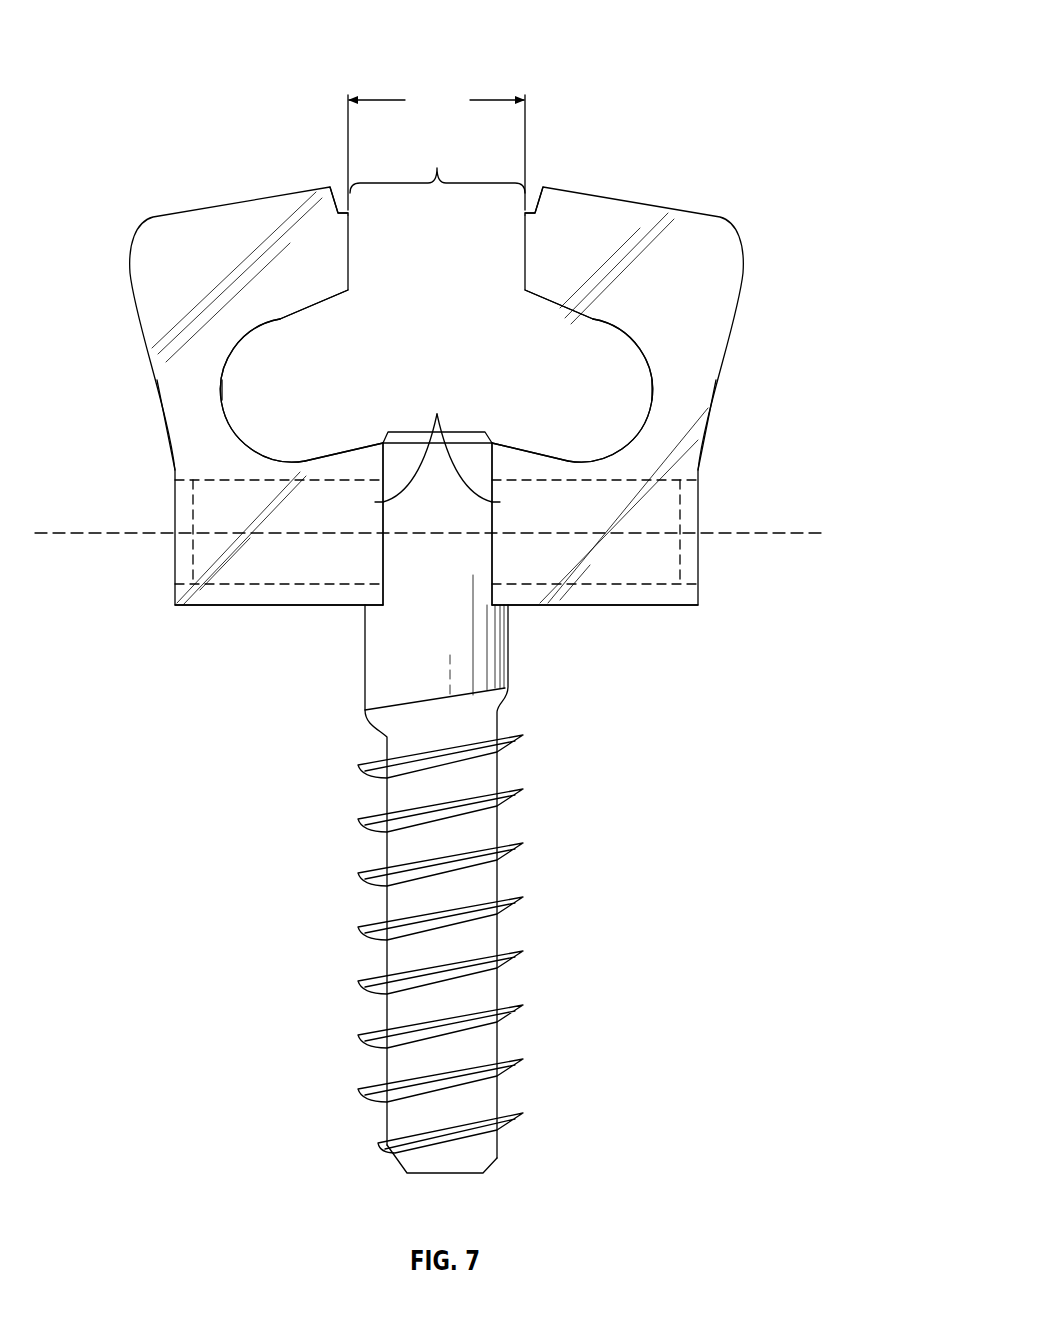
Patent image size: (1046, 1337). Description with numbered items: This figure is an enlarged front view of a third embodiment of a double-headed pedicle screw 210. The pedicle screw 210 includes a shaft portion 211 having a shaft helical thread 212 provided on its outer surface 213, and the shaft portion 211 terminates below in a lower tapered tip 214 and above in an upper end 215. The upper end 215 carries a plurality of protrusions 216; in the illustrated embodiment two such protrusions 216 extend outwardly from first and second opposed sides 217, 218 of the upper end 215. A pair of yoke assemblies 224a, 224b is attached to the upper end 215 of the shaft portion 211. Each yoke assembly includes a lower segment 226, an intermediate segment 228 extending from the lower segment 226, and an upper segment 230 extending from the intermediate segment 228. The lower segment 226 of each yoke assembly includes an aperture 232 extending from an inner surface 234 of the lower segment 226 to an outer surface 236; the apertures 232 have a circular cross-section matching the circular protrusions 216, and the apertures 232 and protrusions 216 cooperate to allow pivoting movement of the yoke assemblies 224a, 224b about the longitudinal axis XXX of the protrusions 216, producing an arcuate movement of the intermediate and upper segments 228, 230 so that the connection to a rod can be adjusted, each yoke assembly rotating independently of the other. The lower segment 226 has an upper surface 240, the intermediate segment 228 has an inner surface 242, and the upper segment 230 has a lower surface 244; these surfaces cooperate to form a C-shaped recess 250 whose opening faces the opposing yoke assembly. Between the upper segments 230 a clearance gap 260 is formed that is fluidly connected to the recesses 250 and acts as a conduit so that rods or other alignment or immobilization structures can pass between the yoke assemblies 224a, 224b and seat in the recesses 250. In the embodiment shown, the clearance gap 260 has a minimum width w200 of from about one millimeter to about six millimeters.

The double-headed pedicle screw 210 is at (767, 78).
The shaft portion 211 is at (515, 895).
The shaft helical thread 212 is at (515, 1005).
The outer surface 213 is at (500, 1095).
The lower tapered tip 214 is at (490, 1165).
The upper end 215 is at (473, 578).
The protrusions 216 is at (240, 572).
The first side 217 is at (383, 548).
The second side 218 is at (492, 548).
The yoke assembly 224a is at (135, 250).
The yoke assembly 224b is at (745, 262).
The lower segment 226 is at (305, 607).
The intermediate segment 228 is at (160, 398).
The upper segment 230 is at (330, 186).
The apertures 232 is at (176, 495).
The inner surface 234 is at (437, 430).
The outer surface 236 is at (175, 596).
The upper surface 240 is at (270, 458).
The inner surface 242 is at (224, 392).
The lower surface 244 is at (348, 293).
The recess 250 is at (339, 376).
The clearance gap 260 is at (437, 167).
The minimum width w200 is at (436, 148).
The longitudinal axis XXX is at (100, 530).